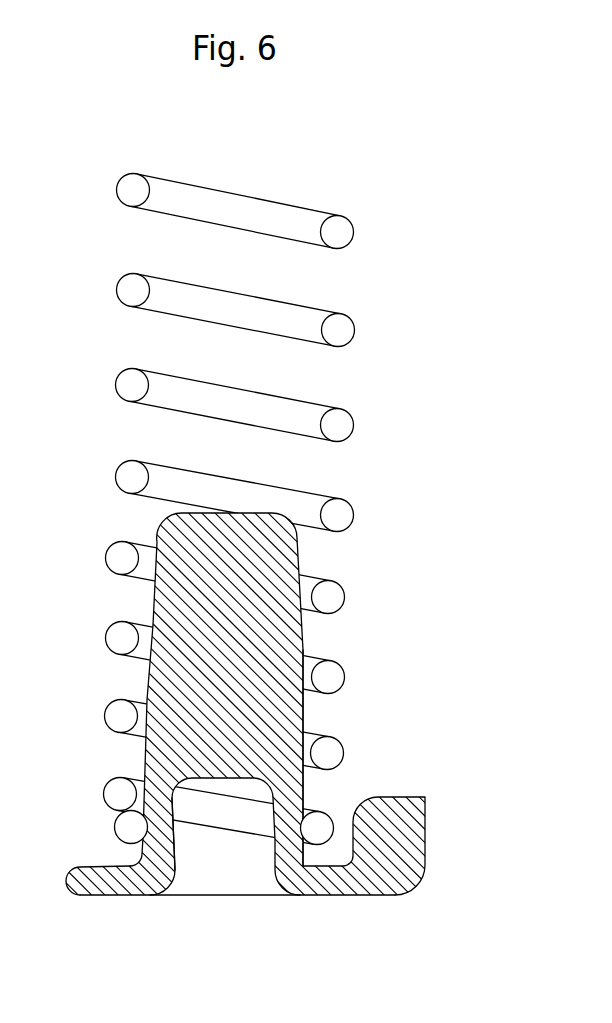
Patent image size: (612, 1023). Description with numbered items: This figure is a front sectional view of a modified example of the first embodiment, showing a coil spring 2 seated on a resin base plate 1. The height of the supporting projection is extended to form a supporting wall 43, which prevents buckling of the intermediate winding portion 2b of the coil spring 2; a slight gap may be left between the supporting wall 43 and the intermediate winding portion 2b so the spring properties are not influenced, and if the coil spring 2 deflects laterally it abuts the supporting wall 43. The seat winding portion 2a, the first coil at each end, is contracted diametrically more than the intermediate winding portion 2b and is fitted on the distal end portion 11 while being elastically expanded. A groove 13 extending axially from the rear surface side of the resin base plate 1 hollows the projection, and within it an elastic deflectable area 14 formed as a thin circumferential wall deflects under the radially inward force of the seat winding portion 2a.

The resin base plate 1 is at (368, 897).
The coil spring 2 is at (356, 317).
The seat winding portion 2a is at (114, 828).
The intermediate winding portion 2b is at (104, 715).
The distal end portion 11 is at (305, 803).
The groove 13 is at (232, 855).
The elastic deflectable area 14 is at (175, 837).
The supporting wall 43 is at (302, 638).